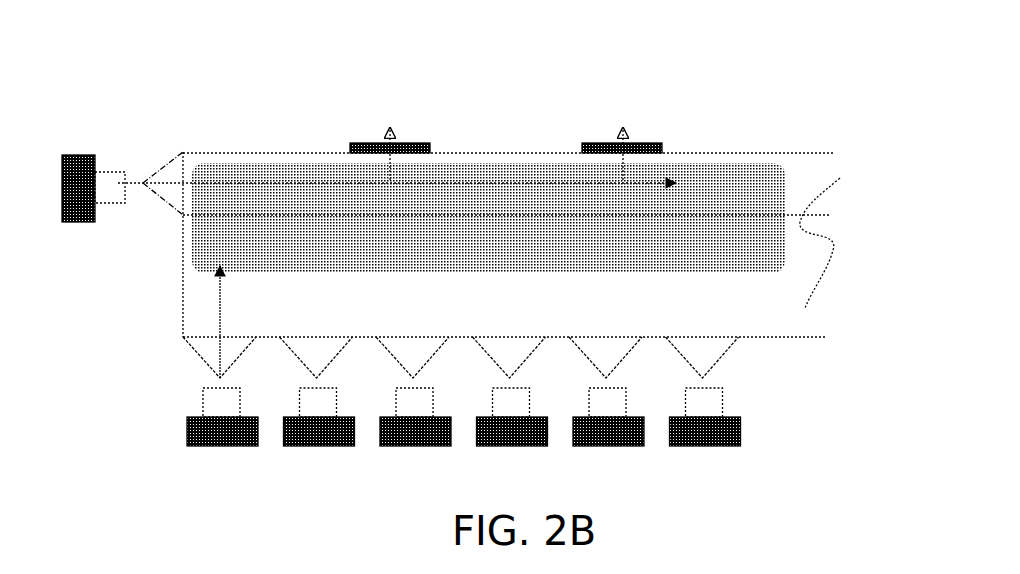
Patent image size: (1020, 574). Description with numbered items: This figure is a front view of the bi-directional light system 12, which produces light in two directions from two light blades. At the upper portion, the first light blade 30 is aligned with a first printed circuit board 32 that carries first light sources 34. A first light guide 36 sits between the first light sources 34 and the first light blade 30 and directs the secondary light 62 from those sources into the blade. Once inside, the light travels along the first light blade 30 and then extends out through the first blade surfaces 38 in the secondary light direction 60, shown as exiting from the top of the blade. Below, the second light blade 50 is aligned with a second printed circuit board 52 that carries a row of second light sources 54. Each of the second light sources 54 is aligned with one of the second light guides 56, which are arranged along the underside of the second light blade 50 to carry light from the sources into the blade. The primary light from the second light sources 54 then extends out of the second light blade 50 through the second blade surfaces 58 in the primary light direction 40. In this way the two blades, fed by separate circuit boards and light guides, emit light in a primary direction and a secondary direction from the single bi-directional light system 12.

The bi-directional light system 12 is at (820, 72).
The first light blade 30 is at (833, 155).
The first printed circuit board 32 is at (67, 155).
The first light sources 34 is at (113, 178).
The first light guide 36 is at (183, 163).
The first blade surfaces 38 is at (640, 148).
The primary light direction 40 is at (141, 320).
The second light blade 50 is at (787, 305).
The second printed circuit board 52 is at (738, 440).
The second light sources 54 is at (720, 388).
The second light guides 56 is at (727, 345).
The second blade surfaces 58 is at (700, 258).
The secondary light direction 60 is at (486, 122).
The secondary light 62 is at (390, 128).